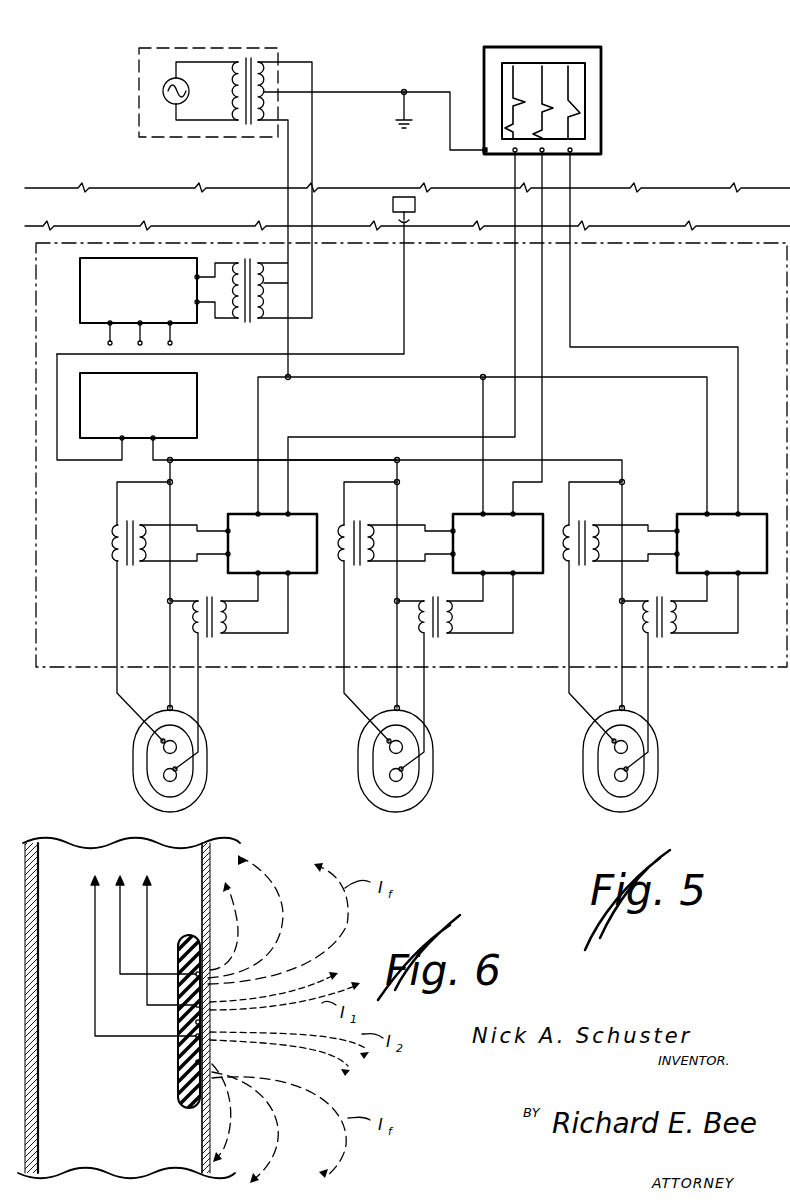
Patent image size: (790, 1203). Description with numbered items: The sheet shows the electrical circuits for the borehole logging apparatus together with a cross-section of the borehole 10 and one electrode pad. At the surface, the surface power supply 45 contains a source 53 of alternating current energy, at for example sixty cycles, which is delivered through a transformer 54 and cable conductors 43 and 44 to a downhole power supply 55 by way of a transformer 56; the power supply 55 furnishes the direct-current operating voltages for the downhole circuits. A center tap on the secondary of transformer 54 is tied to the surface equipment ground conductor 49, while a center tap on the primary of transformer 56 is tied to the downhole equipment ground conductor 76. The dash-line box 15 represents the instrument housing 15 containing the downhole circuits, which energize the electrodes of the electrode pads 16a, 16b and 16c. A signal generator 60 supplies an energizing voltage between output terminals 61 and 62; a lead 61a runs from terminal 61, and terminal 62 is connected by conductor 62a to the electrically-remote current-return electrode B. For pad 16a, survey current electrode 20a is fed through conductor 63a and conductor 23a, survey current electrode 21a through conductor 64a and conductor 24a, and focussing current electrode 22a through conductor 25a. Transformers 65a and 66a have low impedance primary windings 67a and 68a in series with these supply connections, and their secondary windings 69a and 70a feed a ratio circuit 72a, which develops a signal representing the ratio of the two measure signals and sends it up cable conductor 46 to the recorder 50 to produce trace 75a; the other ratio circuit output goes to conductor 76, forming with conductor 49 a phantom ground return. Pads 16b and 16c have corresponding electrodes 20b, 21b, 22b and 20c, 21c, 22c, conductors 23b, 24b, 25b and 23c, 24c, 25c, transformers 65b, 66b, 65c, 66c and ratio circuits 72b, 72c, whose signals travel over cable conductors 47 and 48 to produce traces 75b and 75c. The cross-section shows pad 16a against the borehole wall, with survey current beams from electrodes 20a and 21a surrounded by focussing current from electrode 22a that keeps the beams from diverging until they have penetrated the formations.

In FIG. 6, the borehole 10 is at (40, 865).
In FIG. 5, the instrument housing 15 is at (48, 669).
In FIG. 5, the electrode pad 16a is at (164, 761).
In FIG. 6, the electrode pad 16a is at (190, 1021).
In FIG. 5, the electrode pad 16b is at (362, 761).
In FIG. 5, the electrode pad 16c is at (587, 761).
In FIG. 5, the survey current electrode 20a is at (163, 747).
In FIG. 6, the survey current electrode 20a is at (210, 1022).
In FIG. 5, the current electrode b 20b is at (389, 747).
In FIG. 5, the current electrode c 20c is at (614, 747).
In FIG. 5, the survey current electrode 21a is at (167, 765).
In FIG. 6, the survey current electrode 21a is at (196, 1022).
In FIG. 5, the guard ring b 21b is at (392, 765).
In FIG. 5, the guard ring c 21c is at (617, 765).
In FIG. 5, the focussing current electrode 22a is at (133, 778).
In FIG. 6, the focussing current electrode 22a is at (196, 1062).
In FIG. 5, the return electrode b 22b is at (358, 778).
In FIG. 5, the return electrode c 22c is at (583, 778).
In FIG. 5, the conductor 23a is at (117, 685).
In FIG. 6, the conductor 23a is at (147, 990).
In FIG. 5, the electrode lead b 23b is at (343, 700).
In FIG. 5, the electrode lead c 23c is at (568, 700).
In FIG. 5, the conductor 24a is at (198, 702).
In FIG. 6, the conductor 24a is at (95, 925).
In FIG. 5, the electrode lead b 24b is at (426, 700).
In FIG. 5, the electrode lead c 24c is at (650, 700).
In FIG. 5, the conductor 25a is at (198, 682).
In FIG. 6, the conductor 25a is at (120, 948).
In FIG. 5, the shield lead b 25b is at (400, 682).
In FIG. 5, the shield lead c 25c is at (625, 682).
In FIG. 5, the cable conductor 43 is at (288, 146).
In FIG. 5, the cable conductor 44 is at (312, 170).
In FIG. 5, the surface power supply 45 is at (150, 48).
In FIG. 5, the cable conductor 46 is at (515, 165).
In FIG. 5, the cable conductor 47 is at (542, 167).
In FIG. 5, the cable conductor 48 is at (570, 178).
In FIG. 5, the surface equipment ground conductor 49 is at (360, 92).
In FIG. 5, the recorder 50 is at (545, 83).
In FIG. 5, the source of alternating current energy 53 is at (163, 91).
In FIG. 5, the transformer 54 is at (248, 128).
In FIG. 5, the downhole power supply 55 is at (80, 298).
In FIG. 5, the transformer 56 is at (248, 323).
In FIG. 5, the signal generator 60 is at (197, 377).
In FIG. 5, the output terminal 61 is at (158, 441).
In FIG. 5, the signal generator output lead 61a is at (302, 460).
In FIG. 5, the output terminal 62 is at (116, 440).
In FIG. 5, the conductor 62a is at (353, 354).
In FIG. 5, the conductor 63a is at (150, 482).
In FIG. 5, the conductor 64a is at (178, 601).
In FIG. 5, the transformer 65a is at (140, 556).
In FIG. 5, the transformer b 65b is at (356, 564).
In FIG. 5, the transformer c 65c is at (580, 564).
In FIG. 5, the transformer 66a is at (201, 633).
In FIG. 5, the transformer b 66b is at (434, 642).
In FIG. 5, the transformer c 66c is at (658, 642).
In FIG. 5, the primary winding 67a is at (112, 540).
In FIG. 5, the primary winding 68a is at (193, 615).
In FIG. 5, the secondary winding 69a is at (112, 556).
In FIG. 5, the secondary winding 70a is at (228, 615).
In FIG. 5, the ratio circuit 72a is at (306, 575).
In FIG. 5, the ratio circuit b 72b is at (532, 575).
In FIG. 5, the ratio circuit c 72c is at (756, 575).
In FIG. 5, the trace 75a is at (513, 112).
In FIG. 5, the trace 75b is at (542, 90).
In FIG. 5, the trace 75c is at (578, 102).
In FIG. 5, the downhole equipment ground conductor 76 is at (440, 377).
In FIG. 5, the current-return electrode B is at (420, 205).